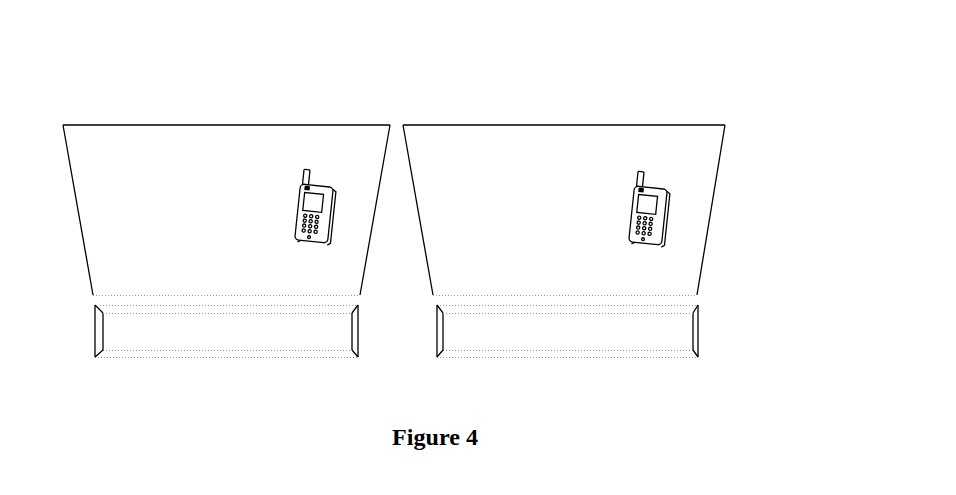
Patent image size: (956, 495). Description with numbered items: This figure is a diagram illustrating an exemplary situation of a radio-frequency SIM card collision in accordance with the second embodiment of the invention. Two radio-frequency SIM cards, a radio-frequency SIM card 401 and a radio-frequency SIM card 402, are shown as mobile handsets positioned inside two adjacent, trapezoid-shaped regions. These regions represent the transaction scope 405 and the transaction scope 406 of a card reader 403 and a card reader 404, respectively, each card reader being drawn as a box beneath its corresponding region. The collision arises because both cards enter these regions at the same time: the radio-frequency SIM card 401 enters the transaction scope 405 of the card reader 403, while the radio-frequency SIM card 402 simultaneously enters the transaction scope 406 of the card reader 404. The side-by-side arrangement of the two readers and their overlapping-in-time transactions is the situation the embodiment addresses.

The radio-frequency SIM card 401 is at (308, 171).
The radio-frequency SIM card 402 is at (645, 192).
The card reader 403 is at (223, 357).
The card reader 404 is at (698, 348).
The transaction scope 405 is at (227, 125).
The transaction scope 406 is at (565, 125).